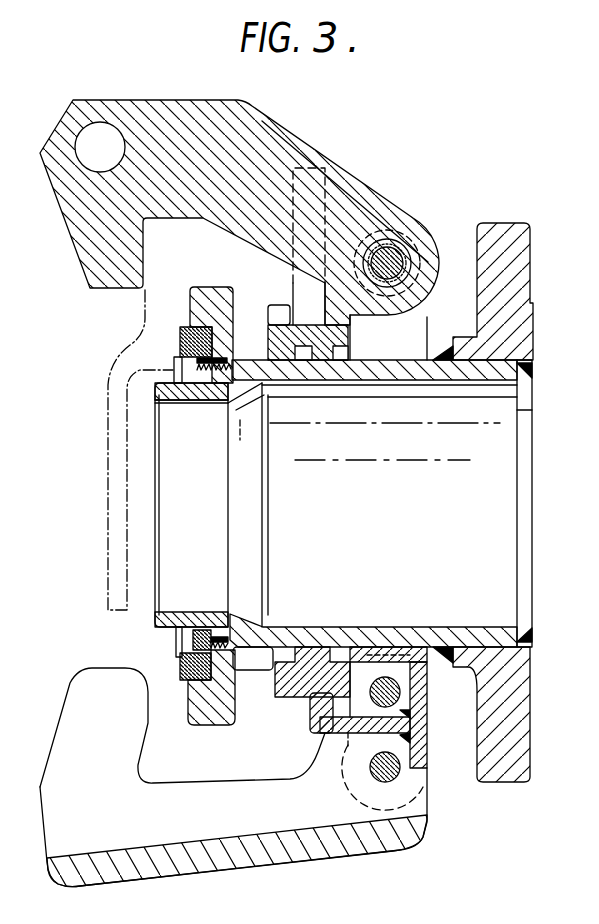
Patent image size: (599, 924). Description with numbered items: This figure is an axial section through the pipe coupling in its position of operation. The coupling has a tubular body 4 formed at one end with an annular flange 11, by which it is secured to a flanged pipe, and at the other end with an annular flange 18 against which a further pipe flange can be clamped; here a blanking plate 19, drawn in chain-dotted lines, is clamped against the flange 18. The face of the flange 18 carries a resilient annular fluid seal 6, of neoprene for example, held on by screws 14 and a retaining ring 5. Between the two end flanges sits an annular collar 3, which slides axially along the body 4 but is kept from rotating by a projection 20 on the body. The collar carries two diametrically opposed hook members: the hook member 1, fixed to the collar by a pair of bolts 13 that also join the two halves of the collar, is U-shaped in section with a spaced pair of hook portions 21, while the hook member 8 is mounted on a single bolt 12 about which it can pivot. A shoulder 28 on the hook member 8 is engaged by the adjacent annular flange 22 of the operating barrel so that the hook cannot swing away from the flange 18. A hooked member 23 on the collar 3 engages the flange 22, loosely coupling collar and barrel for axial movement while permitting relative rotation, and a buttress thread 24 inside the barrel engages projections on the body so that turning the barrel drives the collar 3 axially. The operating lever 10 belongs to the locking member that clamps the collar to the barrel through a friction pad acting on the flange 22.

The hook member 1 is at (436, 840).
The annular collar 3 is at (413, 318).
The tubular body 4 is at (182, 392).
The retaining ring 5 is at (208, 378).
The resilient annular fluid seal 6 is at (190, 666).
The hook member 8 is at (222, 112).
The operating lever 10 is at (310, 193).
The annular flange 11 is at (517, 263).
The bolt 12 is at (387, 262).
The bolts 13 is at (393, 695).
The screws 14 is at (202, 630).
The annular flange 18 is at (207, 292).
The blanking plate 19 is at (110, 443).
The projection 20 is at (390, 660).
The hook portions 21 is at (98, 683).
The annular flange 22 is at (333, 708).
The hooked member 23 is at (348, 746).
The buttress thread 24 is at (340, 655).
The shoulder 28 is at (350, 314).